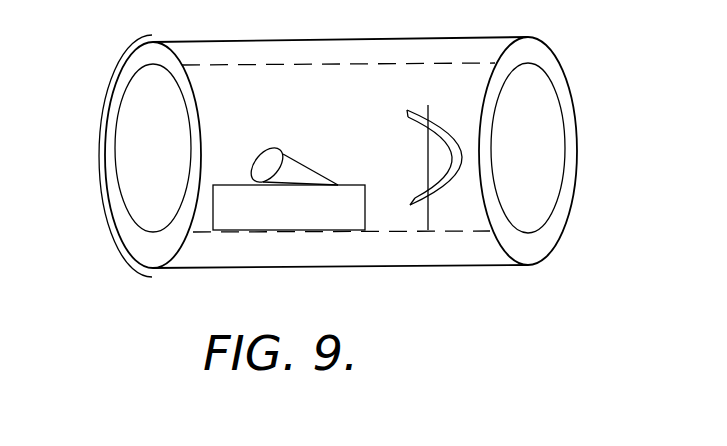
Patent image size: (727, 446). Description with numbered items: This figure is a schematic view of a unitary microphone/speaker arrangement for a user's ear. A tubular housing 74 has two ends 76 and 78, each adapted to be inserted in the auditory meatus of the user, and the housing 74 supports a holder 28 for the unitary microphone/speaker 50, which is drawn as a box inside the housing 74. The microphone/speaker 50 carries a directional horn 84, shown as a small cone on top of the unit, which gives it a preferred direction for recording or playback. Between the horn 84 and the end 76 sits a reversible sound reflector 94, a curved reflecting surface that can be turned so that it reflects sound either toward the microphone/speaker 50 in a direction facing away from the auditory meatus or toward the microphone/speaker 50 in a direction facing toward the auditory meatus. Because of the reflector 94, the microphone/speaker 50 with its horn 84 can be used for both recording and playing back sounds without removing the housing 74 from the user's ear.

The holder 28 is at (139, 155).
The unitary microphone/speaker 50 is at (351, 190).
The housing 74 is at (341, 47).
The end 76 is at (572, 127).
The end 78 is at (118, 92).
The directional horn 84 is at (298, 170).
The reversible sound reflector 94 is at (451, 134).